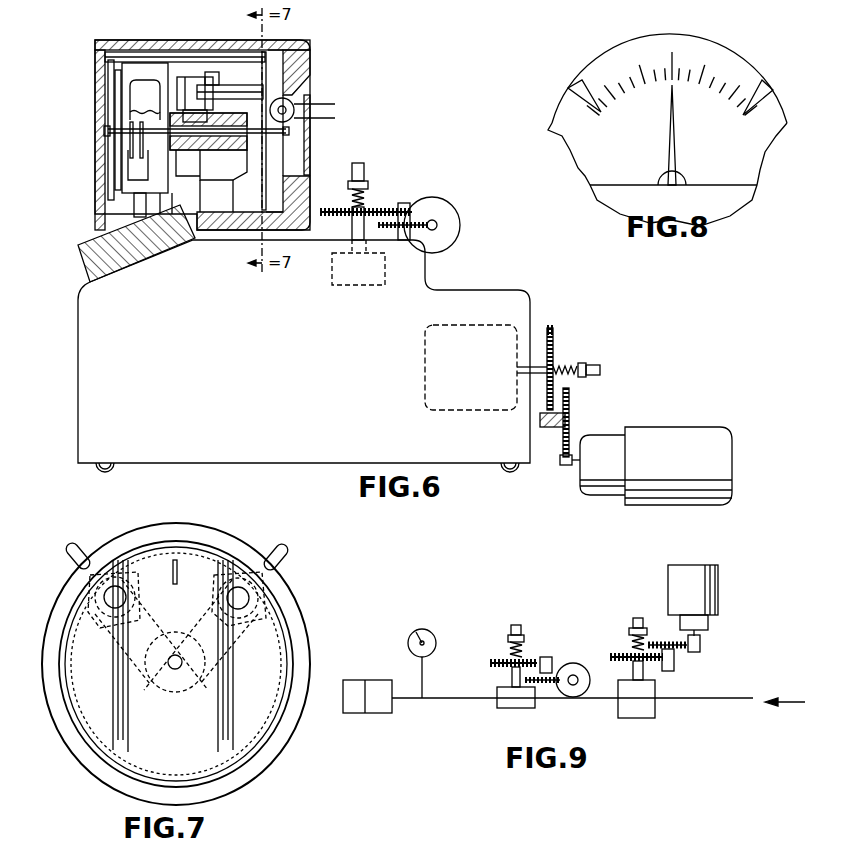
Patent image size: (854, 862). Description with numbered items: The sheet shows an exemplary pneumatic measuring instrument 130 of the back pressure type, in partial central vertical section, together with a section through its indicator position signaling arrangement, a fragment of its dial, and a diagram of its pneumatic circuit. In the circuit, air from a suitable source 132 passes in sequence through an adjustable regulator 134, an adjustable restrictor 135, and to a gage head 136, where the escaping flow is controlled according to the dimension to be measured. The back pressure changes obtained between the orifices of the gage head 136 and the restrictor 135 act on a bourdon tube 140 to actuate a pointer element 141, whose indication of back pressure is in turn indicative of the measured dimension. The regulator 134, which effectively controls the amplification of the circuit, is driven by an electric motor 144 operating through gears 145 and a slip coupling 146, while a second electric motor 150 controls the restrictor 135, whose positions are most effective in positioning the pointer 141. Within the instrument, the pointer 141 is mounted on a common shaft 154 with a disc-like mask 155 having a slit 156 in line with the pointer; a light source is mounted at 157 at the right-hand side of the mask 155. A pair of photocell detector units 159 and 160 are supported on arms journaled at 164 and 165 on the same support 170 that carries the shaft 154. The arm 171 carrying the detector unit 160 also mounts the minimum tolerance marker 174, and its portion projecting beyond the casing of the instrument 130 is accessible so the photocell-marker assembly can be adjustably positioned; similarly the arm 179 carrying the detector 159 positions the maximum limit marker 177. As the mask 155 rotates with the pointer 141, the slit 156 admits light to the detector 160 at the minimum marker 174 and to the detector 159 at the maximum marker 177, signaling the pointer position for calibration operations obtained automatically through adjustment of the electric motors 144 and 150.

In FIG. 6, the pneumatic measuring instrument 130 is at (345, 149).
In FIG. 9, the air source 132 is at (790, 703).
In FIG. 6, the adjustable regulator 134 is at (507, 330).
In FIG. 9, the adjustable regulator 134 is at (640, 718).
In FIG. 6, the adjustable restrictor 135 is at (385, 275).
In FIG. 9, the adjustable restrictor 135 is at (518, 708).
In FIG. 9, the gage head 136 is at (388, 708).
In FIG. 6, the bourdon tube 140 is at (128, 88).
In FIG. 9, the bourdon tube 140 is at (438, 640).
In FIG. 6, the pointer element 141 is at (112, 100).
In FIG. 8, the pointer element 141 is at (674, 148).
In FIG. 9, the pointer element 141 is at (418, 640).
In FIG. 6, the electric motor 144 is at (690, 474).
In FIG. 9, the electric motor 144 is at (702, 590).
In FIG. 9, the gears 145 is at (695, 662).
In FIG. 9, the slip coupling 146 is at (620, 648).
In FIG. 6, the electric motor 150 is at (455, 217).
In FIG. 9, the electric motor 150 is at (570, 662).
In FIG. 6, the common shaft 154 is at (240, 143).
In FIG. 6, the disc-like mask 155 is at (268, 72).
In FIG. 7, the disc-like mask 155 is at (282, 668).
In FIG. 7, the slit 156 is at (180, 565).
In FIG. 6, the light source mounting 157 is at (296, 124).
In FIG. 7, the photocell detector unit 159 is at (68, 600).
In FIG. 6, the photocell detector unit 160 is at (230, 85).
In FIG. 7, the photocell detector unit 160 is at (280, 616).
In FIG. 6, the journal 164 is at (222, 180).
In FIG. 6, the journal 165 is at (183, 155).
In FIG. 6, the support 170 is at (250, 150).
In FIG. 6, the arm 171 is at (195, 62).
In FIG. 7, the arm 171 is at (288, 563).
In FIG. 6, the minimum tolerance marker 174 is at (140, 60).
In FIG. 8, the minimum tolerance marker 174 is at (576, 86).
In FIG. 8, the maximum limit marker 177 is at (770, 80).
In FIG. 7, the arm 179 is at (80, 545).